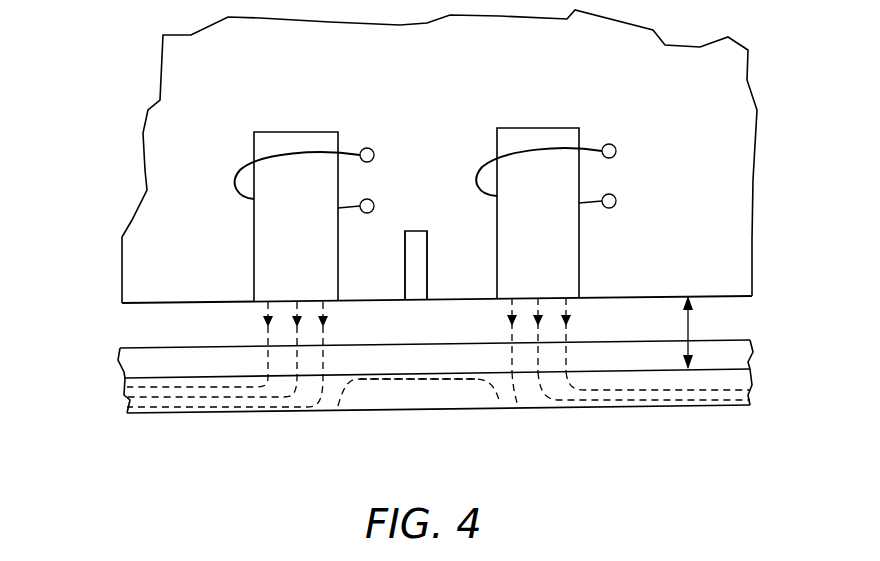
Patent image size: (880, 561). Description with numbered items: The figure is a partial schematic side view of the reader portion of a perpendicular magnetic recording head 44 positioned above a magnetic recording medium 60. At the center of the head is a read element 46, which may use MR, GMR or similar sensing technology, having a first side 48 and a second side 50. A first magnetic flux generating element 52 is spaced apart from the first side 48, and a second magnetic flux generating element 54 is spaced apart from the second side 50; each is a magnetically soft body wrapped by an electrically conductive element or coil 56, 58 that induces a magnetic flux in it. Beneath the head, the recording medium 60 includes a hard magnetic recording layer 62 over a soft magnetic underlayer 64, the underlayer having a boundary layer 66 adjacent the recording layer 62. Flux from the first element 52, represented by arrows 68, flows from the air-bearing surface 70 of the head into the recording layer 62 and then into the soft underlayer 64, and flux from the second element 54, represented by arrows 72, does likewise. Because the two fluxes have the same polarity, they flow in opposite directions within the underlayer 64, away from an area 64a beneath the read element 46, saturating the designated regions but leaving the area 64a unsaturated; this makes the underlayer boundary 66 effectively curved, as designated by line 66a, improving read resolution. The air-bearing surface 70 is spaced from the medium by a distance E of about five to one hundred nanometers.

The perpendicular magnetic recording head 44 is at (172, 76).
The read element 46 is at (417, 228).
The first side 48 is at (405, 272).
The second side 50 is at (427, 265).
The first magnetic flux generating element 52 is at (263, 248).
The second magnetic flux generating element 54 is at (583, 239).
The electrically conductive element or coil 56 is at (240, 168).
The electrically conductive coil 58 is at (485, 164).
The magnetic recording medium 60 is at (416, 377).
The hard magnetic recording layer 62 is at (738, 349).
The soft magnetic underlayer 64 is at (513, 398).
The area of the soft underlayer 64a is at (423, 397).
The boundary layer 66 is at (740, 365).
The line 66a is at (377, 381).
The arrows 68 is at (265, 305).
The air-bearing surface 70 is at (364, 303).
The arrows 72 is at (567, 300).
The distance E is at (690, 327).